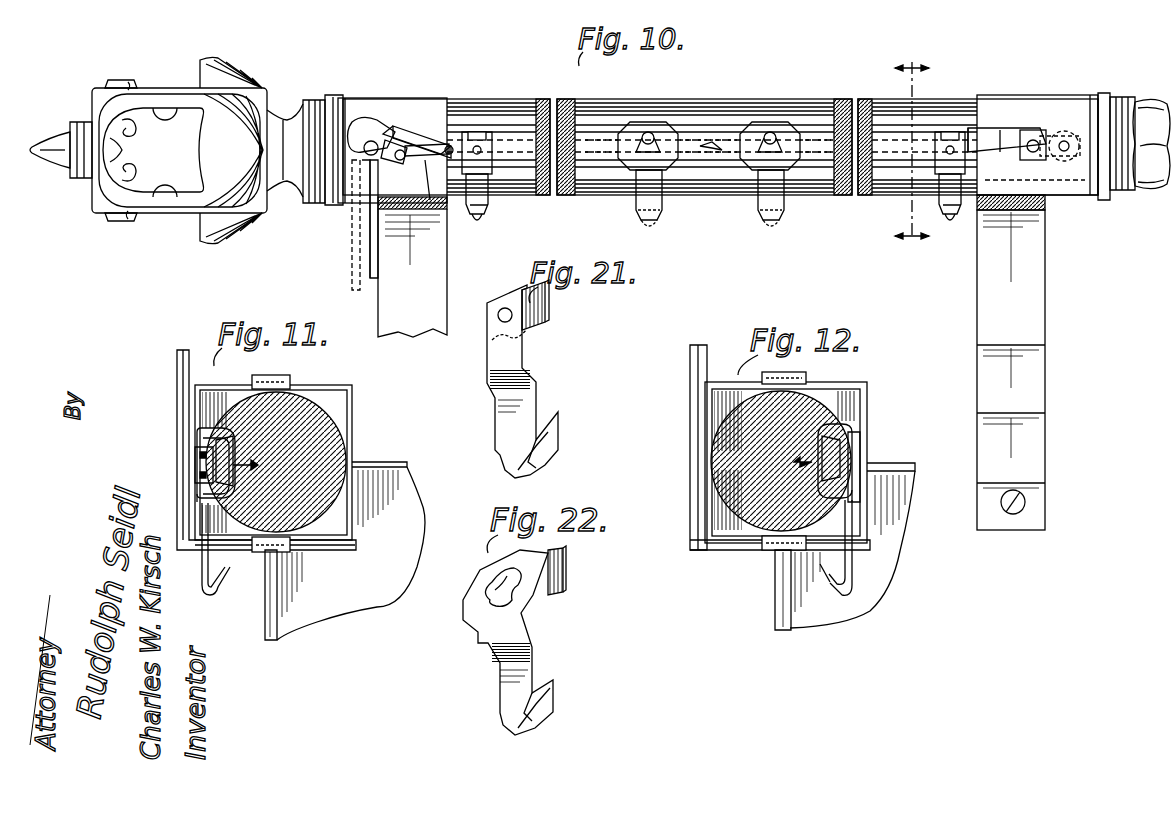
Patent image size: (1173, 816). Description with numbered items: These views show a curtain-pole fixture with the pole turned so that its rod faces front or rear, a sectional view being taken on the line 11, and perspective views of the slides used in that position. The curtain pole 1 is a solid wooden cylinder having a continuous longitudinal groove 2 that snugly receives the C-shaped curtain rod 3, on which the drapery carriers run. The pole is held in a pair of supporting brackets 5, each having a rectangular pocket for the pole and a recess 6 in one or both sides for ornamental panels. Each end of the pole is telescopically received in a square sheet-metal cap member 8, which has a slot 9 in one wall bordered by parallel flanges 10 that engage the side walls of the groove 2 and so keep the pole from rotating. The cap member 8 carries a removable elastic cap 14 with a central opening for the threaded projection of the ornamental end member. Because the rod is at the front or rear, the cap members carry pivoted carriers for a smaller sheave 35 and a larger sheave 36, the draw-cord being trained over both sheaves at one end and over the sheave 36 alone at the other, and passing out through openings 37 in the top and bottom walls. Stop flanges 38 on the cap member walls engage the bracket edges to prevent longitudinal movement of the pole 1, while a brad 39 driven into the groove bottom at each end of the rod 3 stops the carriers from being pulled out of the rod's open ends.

In FIG. 10, the curtain pole 1 is at (600, 100).
In FIG. 11, the curtain pole 1 is at (345, 428).
In FIG. 12, the curtain pole 1 is at (840, 408).
In FIG. 10, the longitudinal groove 2 is at (452, 148).
In FIG. 11, the longitudinal groove 2 is at (248, 400).
In FIG. 12, the longitudinal groove 2 is at (850, 432).
In FIG. 10, the curtain rod 3 is at (612, 134).
In FIG. 11, the curtain rod 3 is at (216, 400).
In FIG. 12, the curtain rod 3 is at (862, 436).
In FIG. 10, the supporting bracket 5 is at (395, 290).
In FIG. 11, the supporting bracket 5 is at (396, 466).
In FIG. 12, the supporting bracket 5 is at (776, 612).
In FIG. 11, the recess 6 is at (368, 552).
In FIG. 12, the recess 6 is at (820, 620).
In FIG. 10, the cap member 8 is at (345, 110).
In FIG. 11, the cap member 8 is at (350, 395).
In FIG. 12, the cap member 8 is at (786, 462).
In FIG. 10, the slot 9 is at (418, 128).
In FIG. 11, the slot 9 is at (203, 434).
In FIG. 12, the slot 9 is at (835, 463).
In FIG. 11, the flange 10 is at (215, 446).
In FIG. 12, the flange 10 is at (857, 430).
In FIG. 10, the section line 11 is at (912, 152).
In FIG. 10, the removable cap 14 is at (332, 100).
In FIG. 10, the sheave 35 is at (412, 140).
In FIG. 10, the sheave 36 is at (356, 205).
In FIG. 10, the opening 37 is at (350, 195).
In FIG. 10, the stop flange 38 is at (470, 130).
In FIG. 11, the stop flange 38 is at (266, 380).
In FIG. 12, the stop flange 38 is at (806, 380).
In FIG. 10, the brad 39 is at (425, 187).